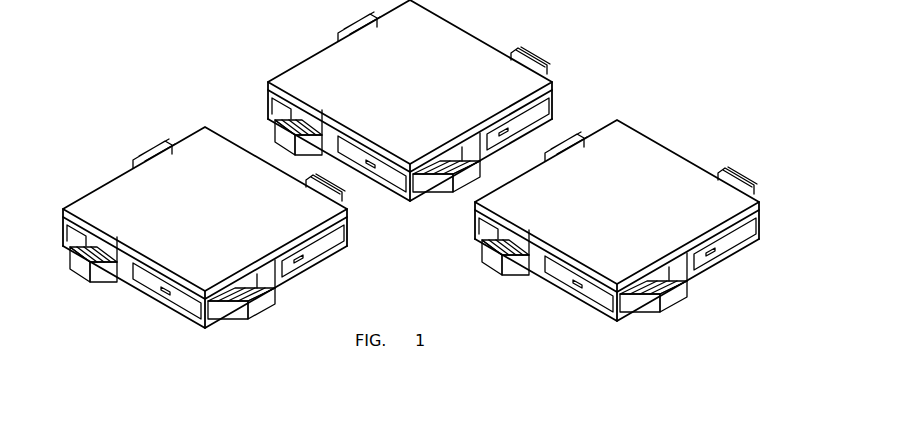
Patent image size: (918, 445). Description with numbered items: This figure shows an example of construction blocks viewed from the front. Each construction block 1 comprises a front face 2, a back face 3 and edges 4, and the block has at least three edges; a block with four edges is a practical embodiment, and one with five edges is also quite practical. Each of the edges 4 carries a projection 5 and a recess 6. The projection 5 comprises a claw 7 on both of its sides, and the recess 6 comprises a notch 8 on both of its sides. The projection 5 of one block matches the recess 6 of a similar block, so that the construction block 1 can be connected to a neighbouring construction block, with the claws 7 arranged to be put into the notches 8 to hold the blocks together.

The construction block 1 is at (409, 181).
The front face 2 is at (406, 89).
The back face 3 is at (413, 202).
The edges 4 is at (602, 123).
The projection 5 is at (102, 275).
The recess 6 is at (184, 302).
The claw 7 is at (83, 243).
The notch 8 is at (150, 291).